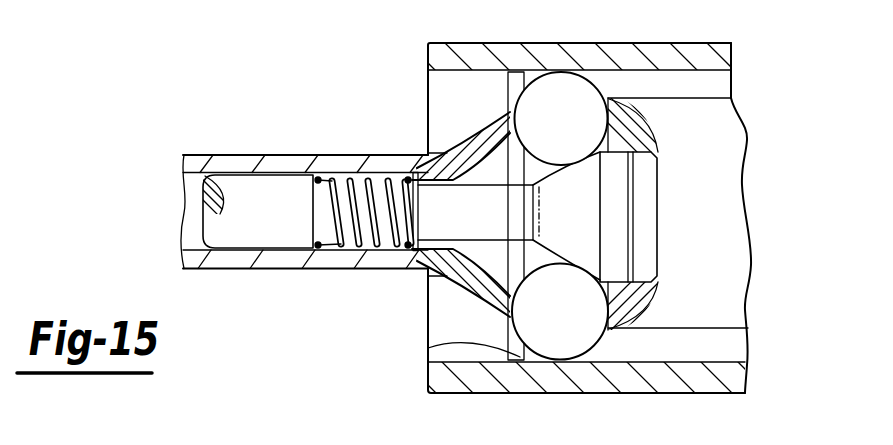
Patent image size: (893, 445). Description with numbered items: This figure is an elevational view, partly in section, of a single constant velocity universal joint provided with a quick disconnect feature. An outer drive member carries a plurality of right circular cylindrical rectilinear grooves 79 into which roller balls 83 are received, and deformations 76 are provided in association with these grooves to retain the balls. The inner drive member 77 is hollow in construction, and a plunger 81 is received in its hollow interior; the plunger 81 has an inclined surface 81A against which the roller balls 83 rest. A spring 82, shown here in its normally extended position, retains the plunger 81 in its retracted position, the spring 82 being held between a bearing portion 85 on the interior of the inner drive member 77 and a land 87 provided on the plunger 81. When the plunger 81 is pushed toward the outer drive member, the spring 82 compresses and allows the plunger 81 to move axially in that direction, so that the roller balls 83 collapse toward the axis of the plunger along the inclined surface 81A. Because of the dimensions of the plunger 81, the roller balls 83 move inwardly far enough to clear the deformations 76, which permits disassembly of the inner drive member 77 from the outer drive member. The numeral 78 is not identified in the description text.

The deformations 76 is at (521, 44).
The inner drive member 77 is at (284, 156).
The housing 78 is at (587, 196).
The right circular cylindrical rectilinear grooves 79 is at (713, 85).
The plunger 81 is at (625, 222).
The inclined surface 81A is at (558, 176).
The spring 82 is at (357, 247).
The roller balls 83 is at (571, 129).
The bearing portion 85 is at (441, 153).
The land 87 is at (313, 248).